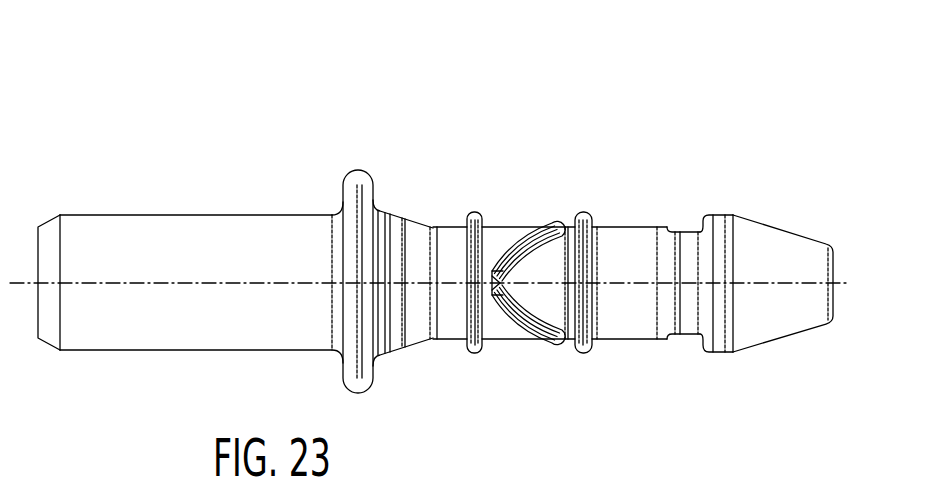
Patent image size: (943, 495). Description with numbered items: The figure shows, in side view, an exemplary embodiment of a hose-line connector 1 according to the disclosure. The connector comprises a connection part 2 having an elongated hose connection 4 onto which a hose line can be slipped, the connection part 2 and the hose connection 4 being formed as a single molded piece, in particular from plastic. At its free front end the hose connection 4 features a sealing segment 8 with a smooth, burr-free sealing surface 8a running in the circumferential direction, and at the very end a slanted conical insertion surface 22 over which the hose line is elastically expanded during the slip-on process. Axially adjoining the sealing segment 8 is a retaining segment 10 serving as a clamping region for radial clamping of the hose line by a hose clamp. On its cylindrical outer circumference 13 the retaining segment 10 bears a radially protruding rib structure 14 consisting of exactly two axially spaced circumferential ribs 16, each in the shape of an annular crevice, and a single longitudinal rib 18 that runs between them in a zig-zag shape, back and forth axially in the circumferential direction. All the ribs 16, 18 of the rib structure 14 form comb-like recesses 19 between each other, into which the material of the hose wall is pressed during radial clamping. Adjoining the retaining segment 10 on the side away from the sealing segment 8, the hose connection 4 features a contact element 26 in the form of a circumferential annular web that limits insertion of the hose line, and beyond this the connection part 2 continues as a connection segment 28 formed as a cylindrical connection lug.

The hose-line connector 1 is at (621, 137).
The connection part 2 is at (403, 222).
The hose connection 4 is at (645, 225).
The sealing segment 8 is at (773, 285).
The sealing surface 8a is at (718, 212).
The retaining segment 10 is at (559, 280).
The outer circumference 13 is at (443, 342).
The rib structure 14 is at (545, 212).
The circumferential rib 16 is at (473, 350).
The longitudinal rib 18 is at (528, 306).
The comb-like recesses 19 is at (543, 265).
The slanted conical insertion surface 22 is at (773, 230).
The contact element 26 is at (366, 386).
The connection segment 28 is at (168, 237).